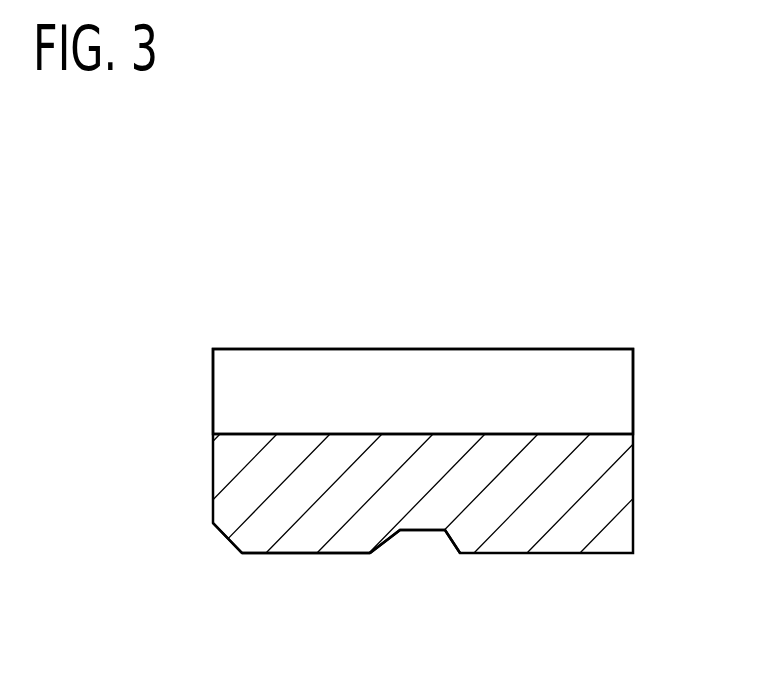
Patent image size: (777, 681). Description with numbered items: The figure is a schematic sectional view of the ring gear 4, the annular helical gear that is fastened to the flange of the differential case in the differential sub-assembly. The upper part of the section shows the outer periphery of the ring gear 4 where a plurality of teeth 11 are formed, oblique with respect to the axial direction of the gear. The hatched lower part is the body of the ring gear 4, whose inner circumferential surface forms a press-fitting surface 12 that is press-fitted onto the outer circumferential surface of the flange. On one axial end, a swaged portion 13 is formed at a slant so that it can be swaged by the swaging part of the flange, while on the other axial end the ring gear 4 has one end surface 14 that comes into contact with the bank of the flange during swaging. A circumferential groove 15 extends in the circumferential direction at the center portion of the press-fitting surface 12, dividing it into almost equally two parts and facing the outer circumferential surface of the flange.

The ring gear 4 is at (633, 458).
The teeth 11 is at (518, 370).
The press-fitting surface 12 is at (303, 553).
The swaged portion 13 is at (235, 547).
The one end surface 14 is at (633, 507).
The circumferential groove 15 is at (425, 531).